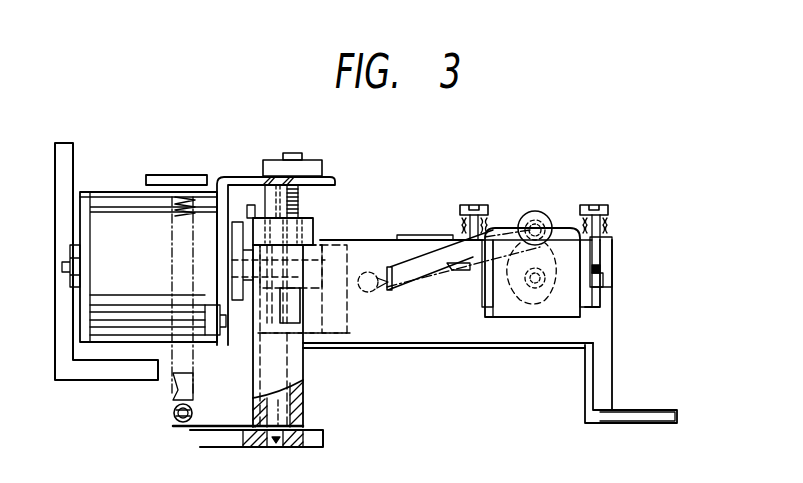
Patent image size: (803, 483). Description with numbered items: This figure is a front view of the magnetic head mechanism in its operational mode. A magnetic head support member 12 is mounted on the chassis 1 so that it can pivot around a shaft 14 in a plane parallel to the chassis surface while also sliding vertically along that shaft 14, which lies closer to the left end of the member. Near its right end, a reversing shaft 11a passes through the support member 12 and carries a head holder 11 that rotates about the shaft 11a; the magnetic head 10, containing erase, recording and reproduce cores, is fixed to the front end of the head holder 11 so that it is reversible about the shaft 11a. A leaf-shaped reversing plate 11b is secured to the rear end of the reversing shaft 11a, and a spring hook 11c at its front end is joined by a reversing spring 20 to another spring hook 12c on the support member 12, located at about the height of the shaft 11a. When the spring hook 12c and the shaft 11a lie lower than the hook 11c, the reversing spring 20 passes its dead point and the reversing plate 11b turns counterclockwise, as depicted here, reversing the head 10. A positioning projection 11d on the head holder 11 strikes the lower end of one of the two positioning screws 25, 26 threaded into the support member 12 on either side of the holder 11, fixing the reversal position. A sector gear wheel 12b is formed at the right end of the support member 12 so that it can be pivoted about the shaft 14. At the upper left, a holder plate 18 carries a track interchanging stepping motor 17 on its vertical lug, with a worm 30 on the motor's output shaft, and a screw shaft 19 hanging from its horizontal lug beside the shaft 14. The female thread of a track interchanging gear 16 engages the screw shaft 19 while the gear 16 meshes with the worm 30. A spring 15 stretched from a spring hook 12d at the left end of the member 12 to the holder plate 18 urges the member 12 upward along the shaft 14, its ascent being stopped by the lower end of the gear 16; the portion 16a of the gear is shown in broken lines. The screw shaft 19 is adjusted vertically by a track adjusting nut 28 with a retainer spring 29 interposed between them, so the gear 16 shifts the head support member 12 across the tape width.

The chassis 1 is at (113, 378).
The magnetic head 10 is at (570, 310).
The head holder 11 is at (568, 232).
The reversing shaft 11a is at (515, 300).
The reversing plate 11b is at (545, 300).
The spring hook 11c is at (537, 213).
The positioning projection 11d is at (605, 280).
The magnetic head support member 12 is at (423, 335).
The sector gear wheel 12b is at (677, 418).
The spring hook 12c is at (372, 270).
The spring hook 12d is at (180, 424).
The shaft 14 is at (280, 415).
The spring 15 is at (177, 217).
The track interchanging gear 16 is at (322, 318).
The housing portion 16a is at (292, 333).
The track interchanging stepping motor 17 is at (107, 203).
The holder plate 18 is at (233, 177).
The screw shaft 19 is at (297, 202).
The reversing spring 20 is at (430, 250).
The positioning screw 25 is at (483, 205).
The positioning screw 26 is at (600, 205).
The track adjusting nut 28 is at (310, 156).
The retainer spring 29 is at (335, 172).
The worm 30 is at (320, 265).